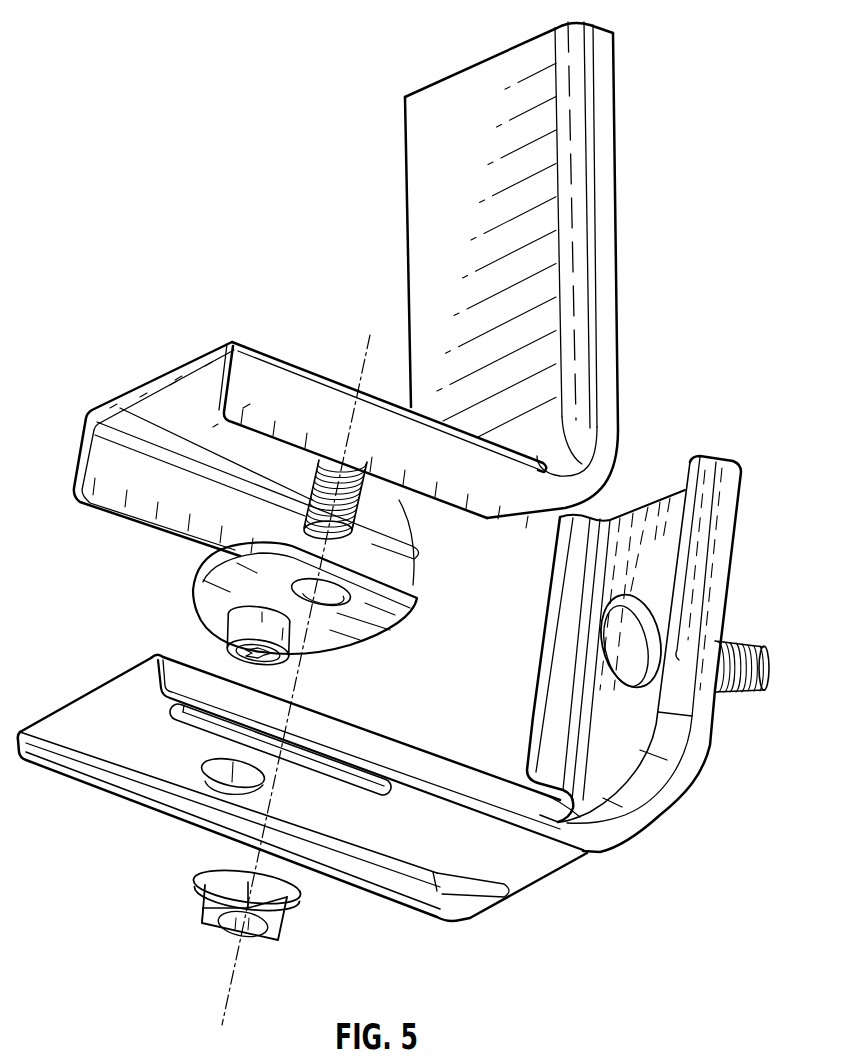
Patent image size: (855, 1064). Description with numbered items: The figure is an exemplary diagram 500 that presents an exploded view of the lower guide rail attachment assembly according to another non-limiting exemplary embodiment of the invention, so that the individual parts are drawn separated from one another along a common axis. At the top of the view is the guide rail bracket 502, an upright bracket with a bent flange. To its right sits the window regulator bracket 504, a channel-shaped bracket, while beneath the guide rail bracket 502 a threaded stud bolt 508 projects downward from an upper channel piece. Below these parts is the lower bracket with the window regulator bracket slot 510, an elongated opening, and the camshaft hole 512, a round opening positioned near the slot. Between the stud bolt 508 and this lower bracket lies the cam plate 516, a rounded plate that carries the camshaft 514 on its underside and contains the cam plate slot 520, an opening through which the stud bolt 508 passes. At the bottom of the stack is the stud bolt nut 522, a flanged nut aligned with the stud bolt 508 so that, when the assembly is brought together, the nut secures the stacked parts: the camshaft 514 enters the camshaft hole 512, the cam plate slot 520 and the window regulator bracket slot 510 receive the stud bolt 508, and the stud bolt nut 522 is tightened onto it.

The diagram 500 is at (467, 51).
The guide rail bracket 502 is at (427, 170).
The window regulator bracket 504 is at (718, 476).
The stud bolt 508 is at (357, 493).
The window regulator bracket slot 510 is at (333, 772).
The camshaft hole 512 is at (215, 777).
The camshaft 514 is at (232, 655).
The cam plate 516 is at (200, 586).
The cam plate slot 520 is at (340, 588).
The stud bolt nut 522 is at (213, 922).